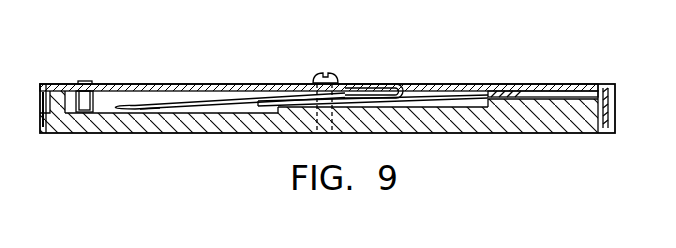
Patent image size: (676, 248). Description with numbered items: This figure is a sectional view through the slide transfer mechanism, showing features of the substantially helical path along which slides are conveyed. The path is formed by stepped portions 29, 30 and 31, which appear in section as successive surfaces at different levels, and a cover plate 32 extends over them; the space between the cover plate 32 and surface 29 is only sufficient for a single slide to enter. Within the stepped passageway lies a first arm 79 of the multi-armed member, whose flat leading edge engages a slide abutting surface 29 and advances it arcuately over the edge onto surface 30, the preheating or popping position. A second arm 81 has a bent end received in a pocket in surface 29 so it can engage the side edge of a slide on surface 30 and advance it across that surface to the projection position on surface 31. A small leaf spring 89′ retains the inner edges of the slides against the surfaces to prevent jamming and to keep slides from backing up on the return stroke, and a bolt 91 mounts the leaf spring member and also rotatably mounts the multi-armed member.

The stepped portion 29 is at (560, 98).
The stepped portion 30 is at (448, 108).
The stepped portion 31 is at (148, 112).
The cover plate 32 is at (458, 89).
The first arm 79 is at (213, 97).
The second arm 81 is at (512, 95).
The small leaf spring 89′ is at (84, 102).
The bolt 91 is at (318, 77).